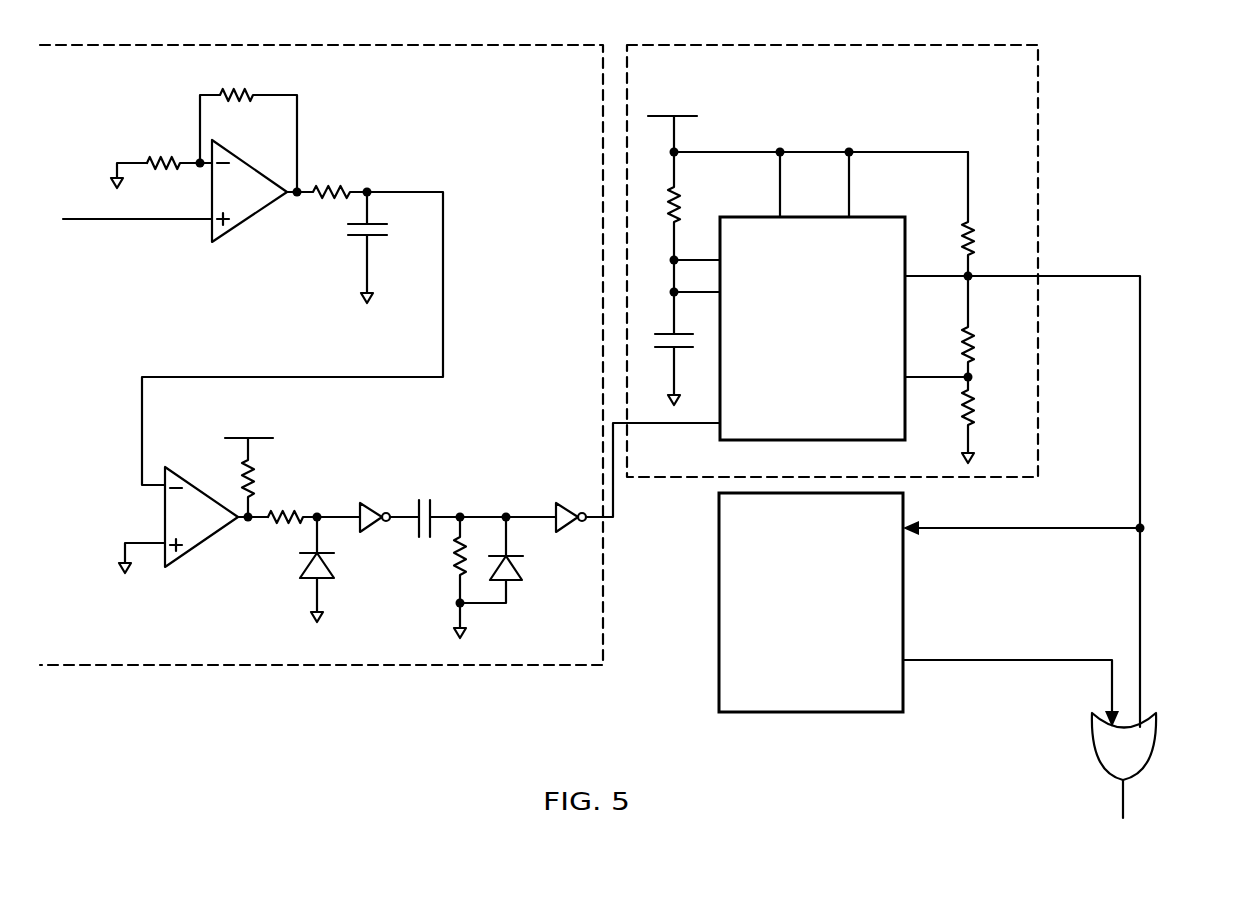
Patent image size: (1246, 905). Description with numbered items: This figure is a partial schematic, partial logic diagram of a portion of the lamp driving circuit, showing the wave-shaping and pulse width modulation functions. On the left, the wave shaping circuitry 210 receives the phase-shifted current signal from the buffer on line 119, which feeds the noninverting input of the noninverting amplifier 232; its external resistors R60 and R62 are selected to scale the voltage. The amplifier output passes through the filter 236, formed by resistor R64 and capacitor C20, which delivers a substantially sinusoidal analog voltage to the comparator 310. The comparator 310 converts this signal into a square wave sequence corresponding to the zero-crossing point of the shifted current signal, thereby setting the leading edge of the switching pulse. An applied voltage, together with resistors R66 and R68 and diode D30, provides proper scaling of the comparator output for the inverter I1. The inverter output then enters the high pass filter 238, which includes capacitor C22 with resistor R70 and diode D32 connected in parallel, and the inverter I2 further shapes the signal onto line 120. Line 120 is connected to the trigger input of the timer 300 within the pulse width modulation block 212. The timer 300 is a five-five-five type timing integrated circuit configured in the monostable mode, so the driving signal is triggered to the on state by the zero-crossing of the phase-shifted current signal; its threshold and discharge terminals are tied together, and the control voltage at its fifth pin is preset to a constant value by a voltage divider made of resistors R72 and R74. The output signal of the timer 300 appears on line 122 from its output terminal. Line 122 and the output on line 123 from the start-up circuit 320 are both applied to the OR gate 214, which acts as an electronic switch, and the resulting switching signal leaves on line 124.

The wave shaping circuitry 210 is at (318, 666).
The pulse width modulation 212 is at (1040, 168).
The noninverting amplifier 232 is at (251, 232).
The line 119 is at (130, 222).
The resistor R60 is at (167, 150).
The resistor R62 is at (247, 86).
The resistor R64 is at (325, 202).
The filter 236 is at (376, 168).
The capacitor C20 is at (390, 230).
The comparator 310 is at (188, 480).
The resistor R66 is at (258, 475).
The resistor R68 is at (275, 528).
The diode D30 is at (303, 568).
The inverter I1 is at (370, 502).
The capacitor C22 is at (422, 540).
The high pass filter 238 is at (472, 503).
The resistor R70 is at (452, 558).
The diode D32 is at (512, 583).
The inverter I2 is at (577, 530).
The line 120 is at (660, 425).
The timer 300 is at (840, 441).
The resistor R72 is at (976, 340).
The resistor R74 is at (976, 405).
The line 122 is at (1140, 408).
The start-up circuit 320 is at (718, 697).
The line 123 is at (1033, 657).
The OR gate 214 is at (1157, 750).
The line 124 is at (1122, 810).